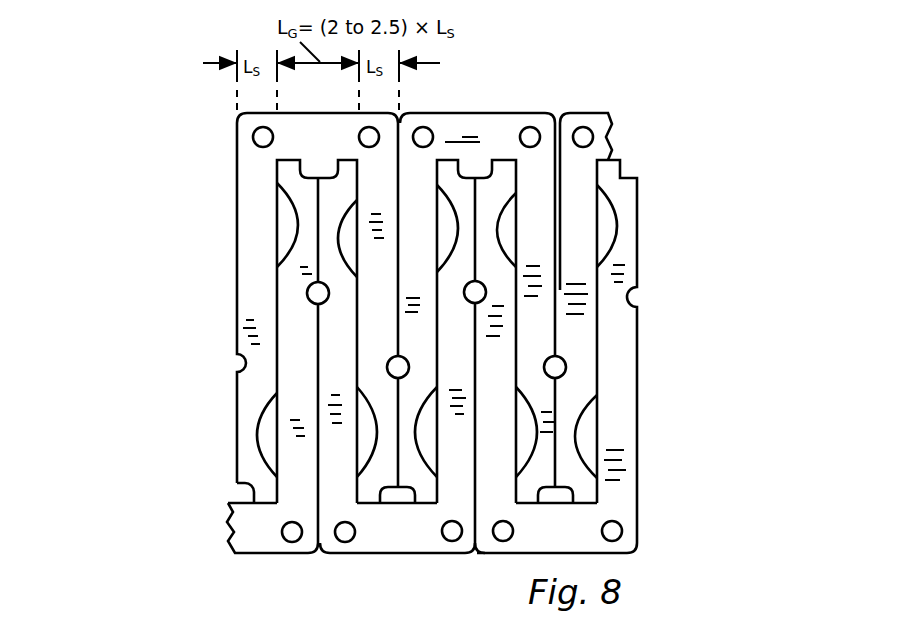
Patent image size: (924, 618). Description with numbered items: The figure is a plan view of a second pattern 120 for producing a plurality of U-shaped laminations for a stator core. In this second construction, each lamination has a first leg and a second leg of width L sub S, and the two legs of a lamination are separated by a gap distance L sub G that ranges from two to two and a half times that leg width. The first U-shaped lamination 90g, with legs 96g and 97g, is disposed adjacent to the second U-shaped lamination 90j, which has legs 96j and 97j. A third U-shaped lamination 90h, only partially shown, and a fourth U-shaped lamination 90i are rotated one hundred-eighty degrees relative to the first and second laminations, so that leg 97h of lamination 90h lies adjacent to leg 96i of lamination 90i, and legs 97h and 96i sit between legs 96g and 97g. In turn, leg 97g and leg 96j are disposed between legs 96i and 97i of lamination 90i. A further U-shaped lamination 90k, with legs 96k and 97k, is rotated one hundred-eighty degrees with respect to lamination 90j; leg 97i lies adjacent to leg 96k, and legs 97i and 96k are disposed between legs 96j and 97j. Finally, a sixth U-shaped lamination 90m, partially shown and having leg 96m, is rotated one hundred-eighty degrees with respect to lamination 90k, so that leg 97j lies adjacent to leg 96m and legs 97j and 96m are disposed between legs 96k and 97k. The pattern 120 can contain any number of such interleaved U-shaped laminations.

The second pattern 120 is at (168, 530).
The first U-shaped lamination 90g is at (248, 243).
The third U-shaped lamination 90h is at (268, 545).
The fourth U-shaped lamination 90i is at (403, 540).
The second U-shaped lamination 90j is at (472, 122).
The U-shaped lamination 90k is at (567, 535).
The sixth U-shaped lamination 90m is at (590, 150).
The first leg 96g is at (270, 285).
The first leg 96i is at (346, 471).
The first leg 96j is at (428, 285).
The first leg 96k is at (509, 384).
The first leg 96m is at (592, 272).
The second leg 97g is at (390, 285).
The second leg 97h is at (313, 341).
The second leg 97i is at (466, 457).
The second leg 97j is at (542, 242).
The second leg 97k is at (630, 374).